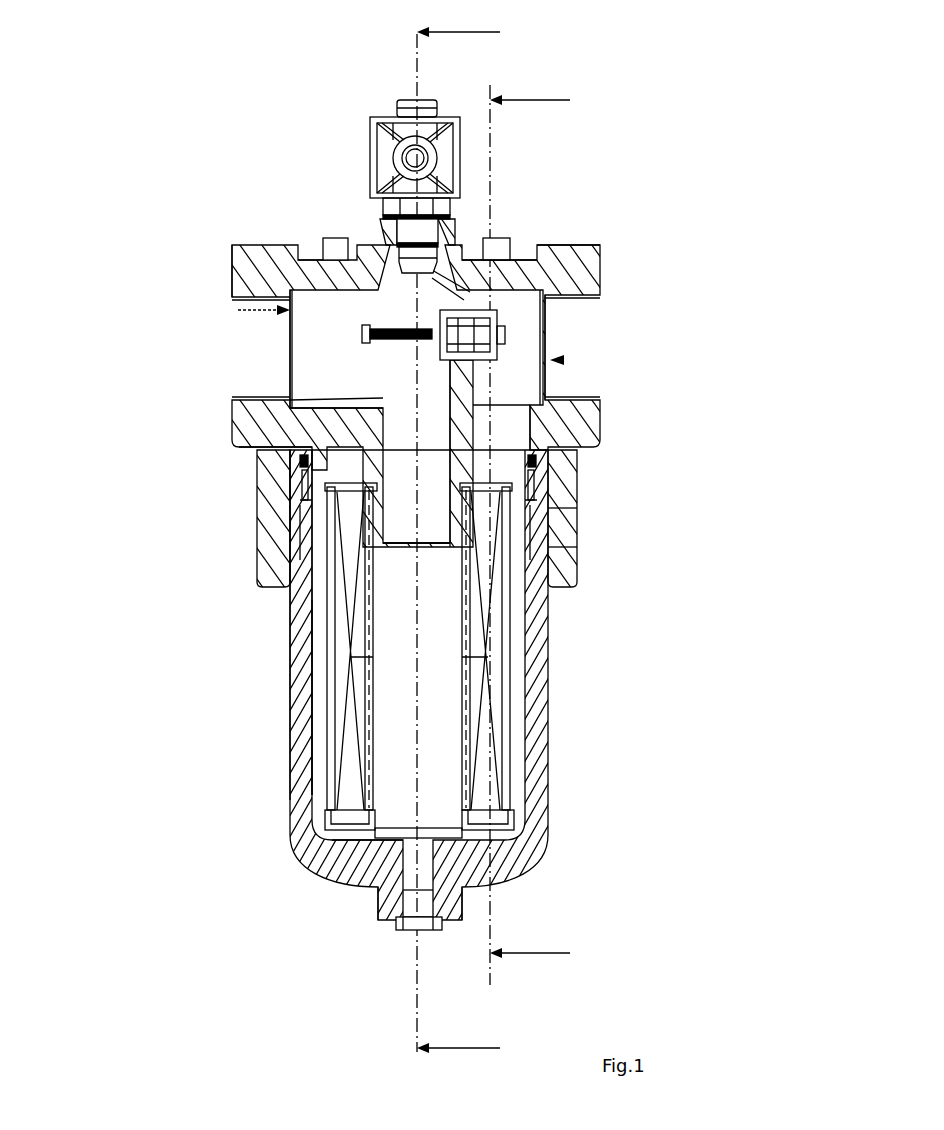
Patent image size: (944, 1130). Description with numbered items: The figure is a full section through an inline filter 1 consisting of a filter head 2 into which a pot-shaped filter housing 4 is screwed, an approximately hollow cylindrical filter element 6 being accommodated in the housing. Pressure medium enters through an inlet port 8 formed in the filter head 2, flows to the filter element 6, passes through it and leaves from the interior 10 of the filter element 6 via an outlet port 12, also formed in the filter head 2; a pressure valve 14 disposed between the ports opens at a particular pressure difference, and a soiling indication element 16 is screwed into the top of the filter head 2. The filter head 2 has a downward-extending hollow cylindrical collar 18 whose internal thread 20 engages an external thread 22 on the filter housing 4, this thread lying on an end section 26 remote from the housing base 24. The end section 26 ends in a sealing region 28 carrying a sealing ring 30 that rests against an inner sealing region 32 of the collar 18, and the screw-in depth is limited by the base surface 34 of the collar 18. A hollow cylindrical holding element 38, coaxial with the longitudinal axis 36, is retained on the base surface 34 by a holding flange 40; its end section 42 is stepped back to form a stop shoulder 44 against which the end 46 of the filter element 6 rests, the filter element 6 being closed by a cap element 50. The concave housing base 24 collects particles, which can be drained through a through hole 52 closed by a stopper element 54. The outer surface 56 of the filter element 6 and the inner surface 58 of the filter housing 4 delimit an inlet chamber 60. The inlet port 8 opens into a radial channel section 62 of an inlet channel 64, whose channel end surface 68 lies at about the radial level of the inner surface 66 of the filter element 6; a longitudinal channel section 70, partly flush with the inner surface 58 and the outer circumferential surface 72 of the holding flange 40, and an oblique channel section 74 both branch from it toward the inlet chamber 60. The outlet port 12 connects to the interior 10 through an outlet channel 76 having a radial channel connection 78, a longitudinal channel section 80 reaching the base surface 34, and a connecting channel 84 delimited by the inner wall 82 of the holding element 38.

The inline filter 1 is at (108, 93).
The filter head 2 is at (243, 265).
The filter housing 4 is at (548, 728).
The filter element 6 is at (497, 664).
The inlet port 8 is at (585, 312).
The interior 10 is at (406, 723).
The outlet port 12 is at (250, 345).
The pressure valve 14 is at (462, 300).
The soiling indication element 16 is at (385, 170).
The collar 18 is at (558, 528).
The internal thread 20 is at (253, 588).
The external thread 22 is at (542, 552).
The housing base 24 is at (458, 888).
The end section 26 is at (262, 490).
The sealing region 28 is at (250, 453).
The sealing ring 30 is at (262, 472).
The inner sealing region 32 is at (540, 452).
The base surface 34 is at (310, 404).
The longitudinal axis 36 is at (420, 968).
The holding element 38 is at (262, 557).
The holding flange 40 is at (308, 388).
The end section 42 is at (328, 590).
The stop shoulder 44 is at (530, 508).
The end 46 is at (530, 435).
The cap element 50 is at (263, 518).
The through hole 52 is at (430, 932).
The stopper element 54 is at (385, 925).
The bottom plate 56 is at (500, 773).
The inner surface 58 is at (520, 818).
The inlet chamber 60 is at (318, 738).
The radial channel section 62 is at (585, 250).
The inlet channel 64 is at (562, 360).
The inner surface 66 is at (455, 698).
The channel end surface 68 is at (525, 310).
The longitudinal channel section 70 is at (560, 408).
The outer circumferential surface 72 is at (310, 385).
The oblique channel section 74 is at (515, 372).
The outlet channel 76 is at (248, 318).
The radial channel connection 78 is at (297, 285).
The longitudinal channel section 80 is at (432, 402).
The inner wall 82 is at (328, 652).
The connecting channel 84 is at (475, 612).